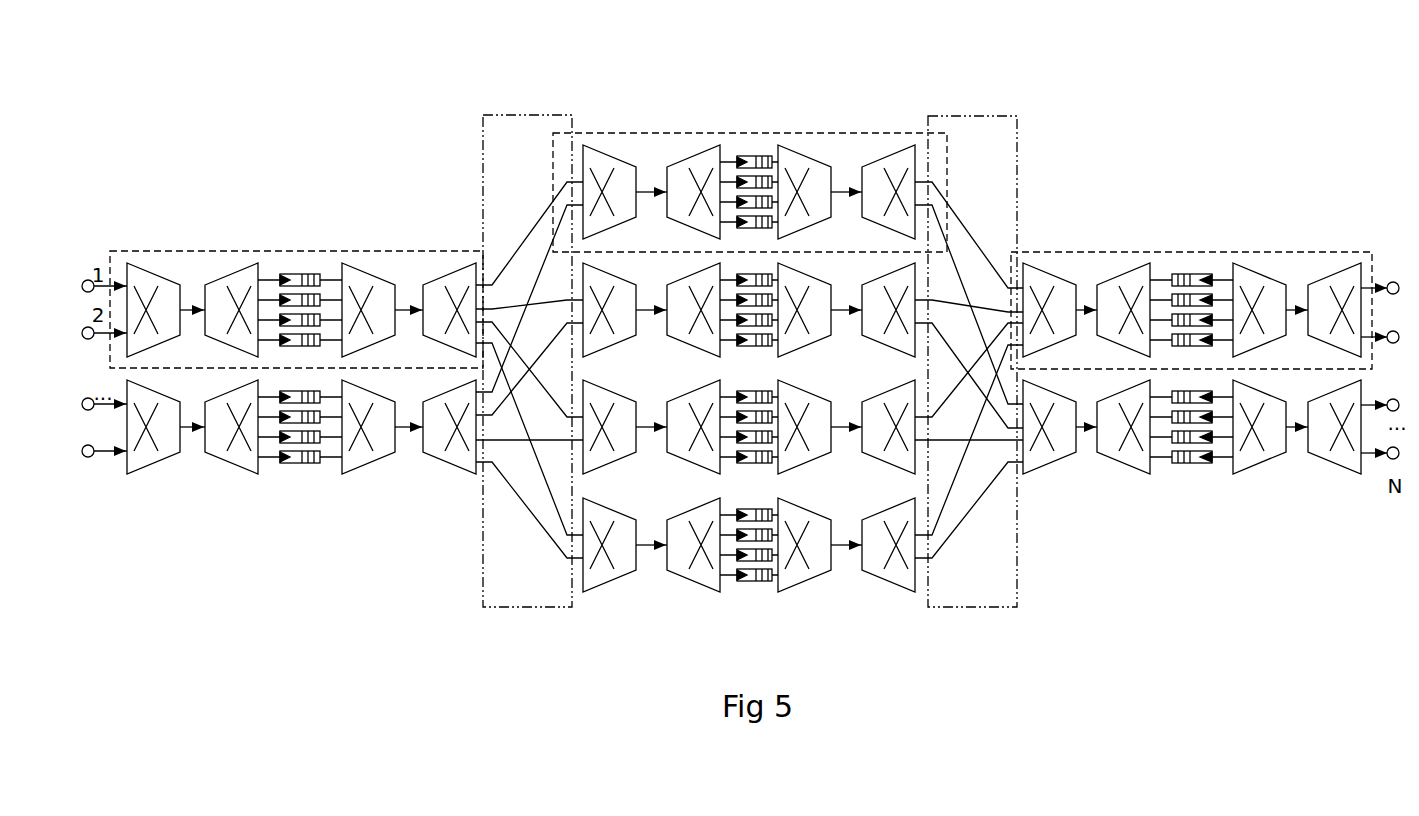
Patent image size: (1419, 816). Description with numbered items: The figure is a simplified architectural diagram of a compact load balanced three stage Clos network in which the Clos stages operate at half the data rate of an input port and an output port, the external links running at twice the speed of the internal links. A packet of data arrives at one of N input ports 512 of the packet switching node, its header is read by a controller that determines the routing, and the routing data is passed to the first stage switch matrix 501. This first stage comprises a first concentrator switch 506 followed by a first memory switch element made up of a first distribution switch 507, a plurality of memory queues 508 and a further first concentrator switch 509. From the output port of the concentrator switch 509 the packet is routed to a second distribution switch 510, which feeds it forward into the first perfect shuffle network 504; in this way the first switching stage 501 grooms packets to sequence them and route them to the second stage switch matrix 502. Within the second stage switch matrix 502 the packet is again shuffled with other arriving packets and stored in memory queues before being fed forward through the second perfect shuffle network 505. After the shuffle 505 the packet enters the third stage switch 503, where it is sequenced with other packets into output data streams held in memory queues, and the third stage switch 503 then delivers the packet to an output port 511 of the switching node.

The first stage switch matrix 501 is at (233, 247).
The second stage switch matrix 502 is at (697, 132).
The third stage switch 503 is at (1275, 245).
The first perfect shuffle network 504 is at (517, 113).
The second perfect shuffle network 505 is at (997, 112).
The first concentrator switch 506 is at (147, 472).
The first distribution switch 507 is at (233, 470).
The memory queues 508 is at (287, 470).
The first concentrator switch 509 is at (350, 472).
The second distribution switch 510 is at (467, 475).
The output port 511 is at (1393, 277).
The input ports 512 is at (87, 470).